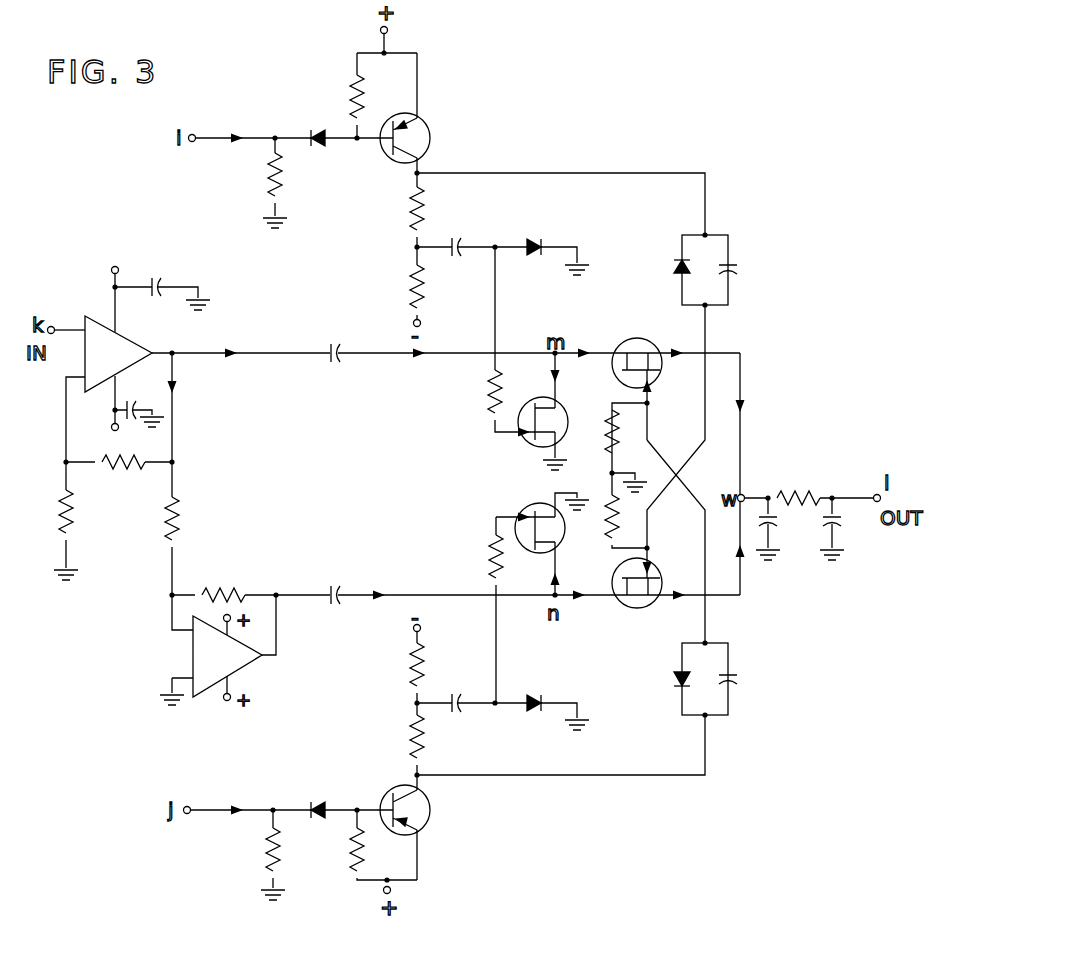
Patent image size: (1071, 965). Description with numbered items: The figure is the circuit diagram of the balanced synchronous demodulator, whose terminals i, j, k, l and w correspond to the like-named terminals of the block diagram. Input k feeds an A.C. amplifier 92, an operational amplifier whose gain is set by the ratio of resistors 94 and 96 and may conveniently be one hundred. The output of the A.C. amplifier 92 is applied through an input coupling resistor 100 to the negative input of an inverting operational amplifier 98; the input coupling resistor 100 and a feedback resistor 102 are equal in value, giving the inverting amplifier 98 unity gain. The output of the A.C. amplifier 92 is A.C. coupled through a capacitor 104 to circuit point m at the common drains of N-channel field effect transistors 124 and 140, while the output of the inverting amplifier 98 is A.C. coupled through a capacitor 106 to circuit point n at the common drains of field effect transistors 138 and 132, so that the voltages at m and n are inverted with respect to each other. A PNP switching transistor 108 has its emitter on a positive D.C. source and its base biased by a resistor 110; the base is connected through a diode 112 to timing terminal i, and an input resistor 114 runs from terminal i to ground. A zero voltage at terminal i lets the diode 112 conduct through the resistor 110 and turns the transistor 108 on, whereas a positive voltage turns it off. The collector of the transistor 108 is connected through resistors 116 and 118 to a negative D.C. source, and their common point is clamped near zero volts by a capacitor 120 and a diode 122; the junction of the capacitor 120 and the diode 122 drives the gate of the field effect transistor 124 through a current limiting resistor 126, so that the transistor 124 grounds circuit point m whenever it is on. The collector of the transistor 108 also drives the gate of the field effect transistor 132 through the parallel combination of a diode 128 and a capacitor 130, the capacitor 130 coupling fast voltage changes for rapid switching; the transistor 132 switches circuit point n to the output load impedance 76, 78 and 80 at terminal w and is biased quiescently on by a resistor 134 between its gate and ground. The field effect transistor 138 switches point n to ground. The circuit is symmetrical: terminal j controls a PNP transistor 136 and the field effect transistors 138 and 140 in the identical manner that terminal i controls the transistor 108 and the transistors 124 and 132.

The output load impedance 76 is at (780, 520).
The output load impedance 78 is at (850, 522).
The output load impedance 80 is at (791, 488).
The A.C. amplifier 92 is at (104, 320).
The resistor 94 is at (70, 520).
The resistor 96 is at (126, 469).
The inverting operational amplifier 98 is at (244, 672).
The input coupling resistor 100 is at (187, 512).
The feedback resistor 102 is at (227, 590).
The capacitor 104 is at (333, 365).
The capacitor 106 is at (339, 586).
The PNP switching transistor 108 is at (426, 131).
The resistor 110 is at (348, 96).
The diode 112 is at (322, 149).
The input resistor 114 is at (268, 180).
The resistor 116 is at (404, 212).
The resistor 118 is at (406, 286).
The capacitor 120 is at (462, 238).
The diode 122 is at (534, 239).
The field effect transistor 124 is at (524, 436).
The current limiting resistor 126 is at (488, 386).
The diode 128 is at (679, 276).
The capacitor 130 is at (734, 270).
The field effect transistor 132 is at (663, 574).
The resistor 134 is at (607, 528).
The PNP transistor 136 is at (432, 818).
The field effect transistor 138 is at (528, 508).
The field effect transistor 140 is at (627, 340).